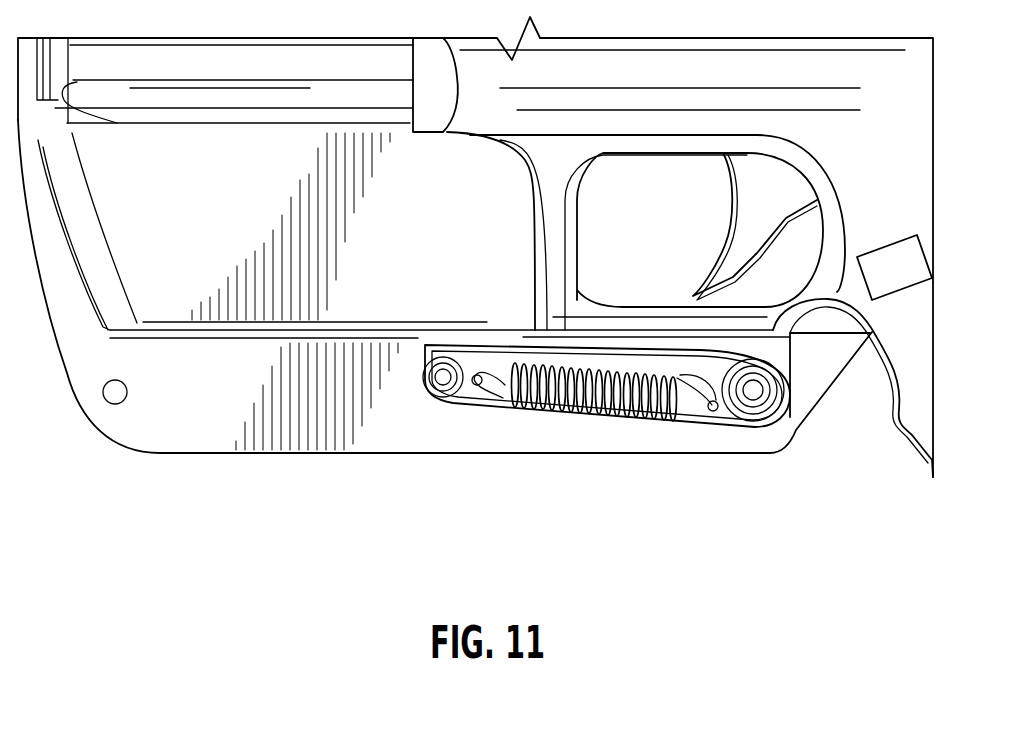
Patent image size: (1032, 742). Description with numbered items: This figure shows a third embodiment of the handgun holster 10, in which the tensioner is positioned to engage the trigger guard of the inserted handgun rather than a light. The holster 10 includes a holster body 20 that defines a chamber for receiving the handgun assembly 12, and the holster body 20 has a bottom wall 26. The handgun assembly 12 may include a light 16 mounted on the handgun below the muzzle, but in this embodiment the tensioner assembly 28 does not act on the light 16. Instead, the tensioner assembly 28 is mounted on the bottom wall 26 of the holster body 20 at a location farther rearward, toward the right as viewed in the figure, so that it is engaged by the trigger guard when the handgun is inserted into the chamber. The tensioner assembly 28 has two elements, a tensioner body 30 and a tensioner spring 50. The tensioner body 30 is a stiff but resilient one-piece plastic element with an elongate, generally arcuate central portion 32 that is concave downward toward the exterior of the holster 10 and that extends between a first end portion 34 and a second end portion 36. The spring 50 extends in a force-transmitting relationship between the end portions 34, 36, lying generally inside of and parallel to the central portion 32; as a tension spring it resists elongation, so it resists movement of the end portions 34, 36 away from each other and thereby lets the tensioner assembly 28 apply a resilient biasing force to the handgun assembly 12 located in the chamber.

The handgun holster 10 is at (458, 508).
The handgun assembly 12 is at (835, 337).
The light 16 is at (553, 313).
The holster body 20 is at (193, 457).
The bottom wall 26 is at (812, 405).
The tensioner assembly 28 is at (395, 405).
The tensioner body 30 is at (696, 365).
The central portion 32 is at (647, 357).
The first end portion 34 is at (775, 418).
The second end portion 36 is at (440, 402).
The tensioner spring 50 is at (550, 413).